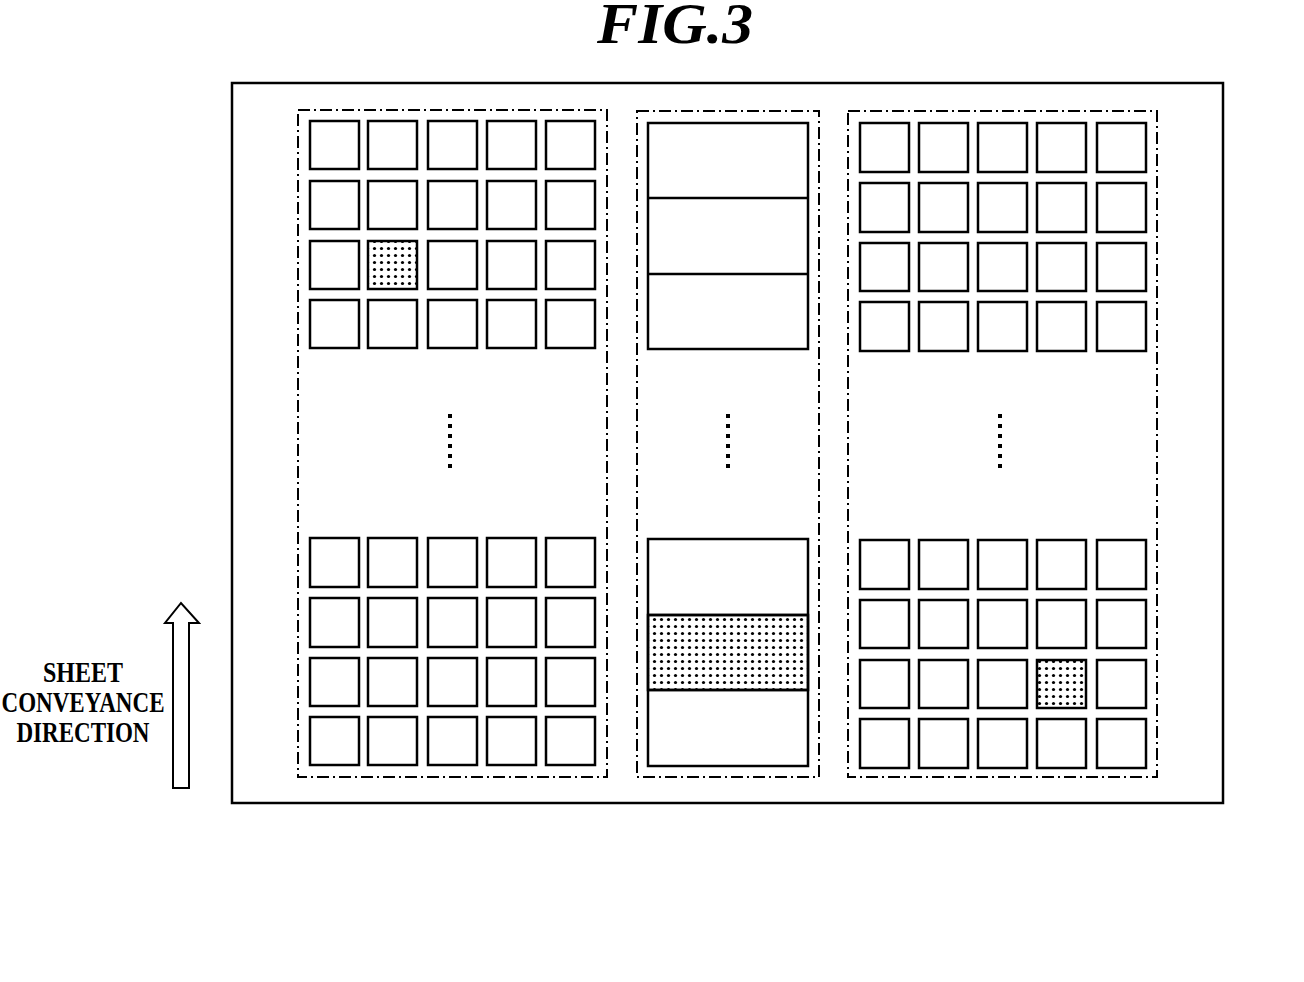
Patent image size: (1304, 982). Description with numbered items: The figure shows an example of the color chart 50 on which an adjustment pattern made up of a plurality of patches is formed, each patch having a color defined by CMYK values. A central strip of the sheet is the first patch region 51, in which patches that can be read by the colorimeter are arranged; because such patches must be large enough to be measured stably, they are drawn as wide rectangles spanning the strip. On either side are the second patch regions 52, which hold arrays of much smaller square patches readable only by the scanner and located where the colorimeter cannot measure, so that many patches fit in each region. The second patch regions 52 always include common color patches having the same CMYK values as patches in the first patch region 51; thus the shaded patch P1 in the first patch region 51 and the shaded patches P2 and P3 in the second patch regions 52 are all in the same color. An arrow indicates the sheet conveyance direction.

The color chart 50 is at (1225, 140).
The first patch region 51 is at (744, 777).
The second patch regions 52 is at (425, 777).
The patch P1 is at (728, 672).
The patch P2 is at (393, 264).
The patch P3 is at (1073, 692).